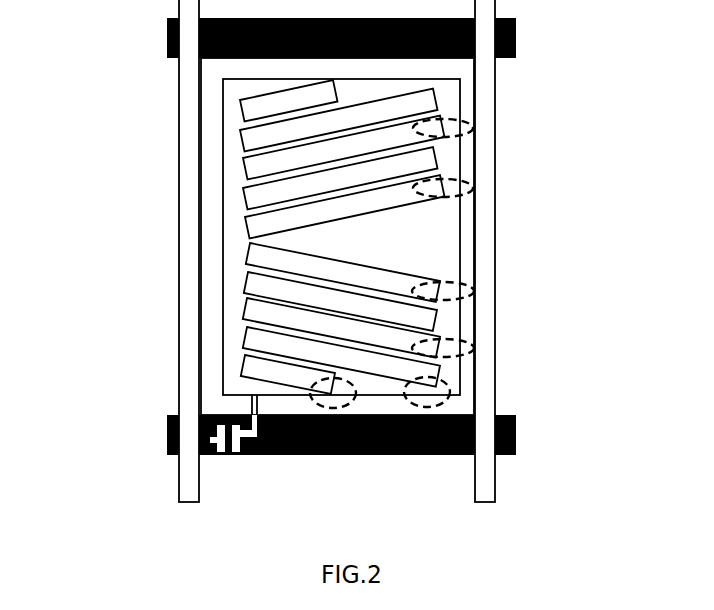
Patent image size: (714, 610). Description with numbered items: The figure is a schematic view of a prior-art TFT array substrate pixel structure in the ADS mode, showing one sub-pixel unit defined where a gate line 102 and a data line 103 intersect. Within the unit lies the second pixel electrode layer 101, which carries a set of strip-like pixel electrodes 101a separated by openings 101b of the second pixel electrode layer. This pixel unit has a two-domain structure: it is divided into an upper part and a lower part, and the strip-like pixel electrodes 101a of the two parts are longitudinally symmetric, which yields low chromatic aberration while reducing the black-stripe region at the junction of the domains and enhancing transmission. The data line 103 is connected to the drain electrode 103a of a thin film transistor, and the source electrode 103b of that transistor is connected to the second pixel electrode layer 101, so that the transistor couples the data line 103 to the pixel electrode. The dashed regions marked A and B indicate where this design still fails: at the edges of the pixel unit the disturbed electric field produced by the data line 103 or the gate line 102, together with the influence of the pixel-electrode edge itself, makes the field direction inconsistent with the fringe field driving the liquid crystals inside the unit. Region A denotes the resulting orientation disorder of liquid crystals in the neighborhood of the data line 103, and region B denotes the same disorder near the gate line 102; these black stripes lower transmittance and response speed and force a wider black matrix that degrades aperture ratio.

The second pixel electrode layer 101 is at (240, 137).
The strip-like pixel electrodes 101a is at (243, 186).
The openings 101b is at (262, 228).
The gate line 102 is at (170, 42).
The data line 103 is at (178, 306).
The drain electrode 103a is at (212, 440).
The source electrode 103b is at (225, 457).
The region of orientation disorder of liquid crystals near data lines A is at (473, 128).
The region of orientation disorder of liquid crystals near gate lines B is at (367, 398).